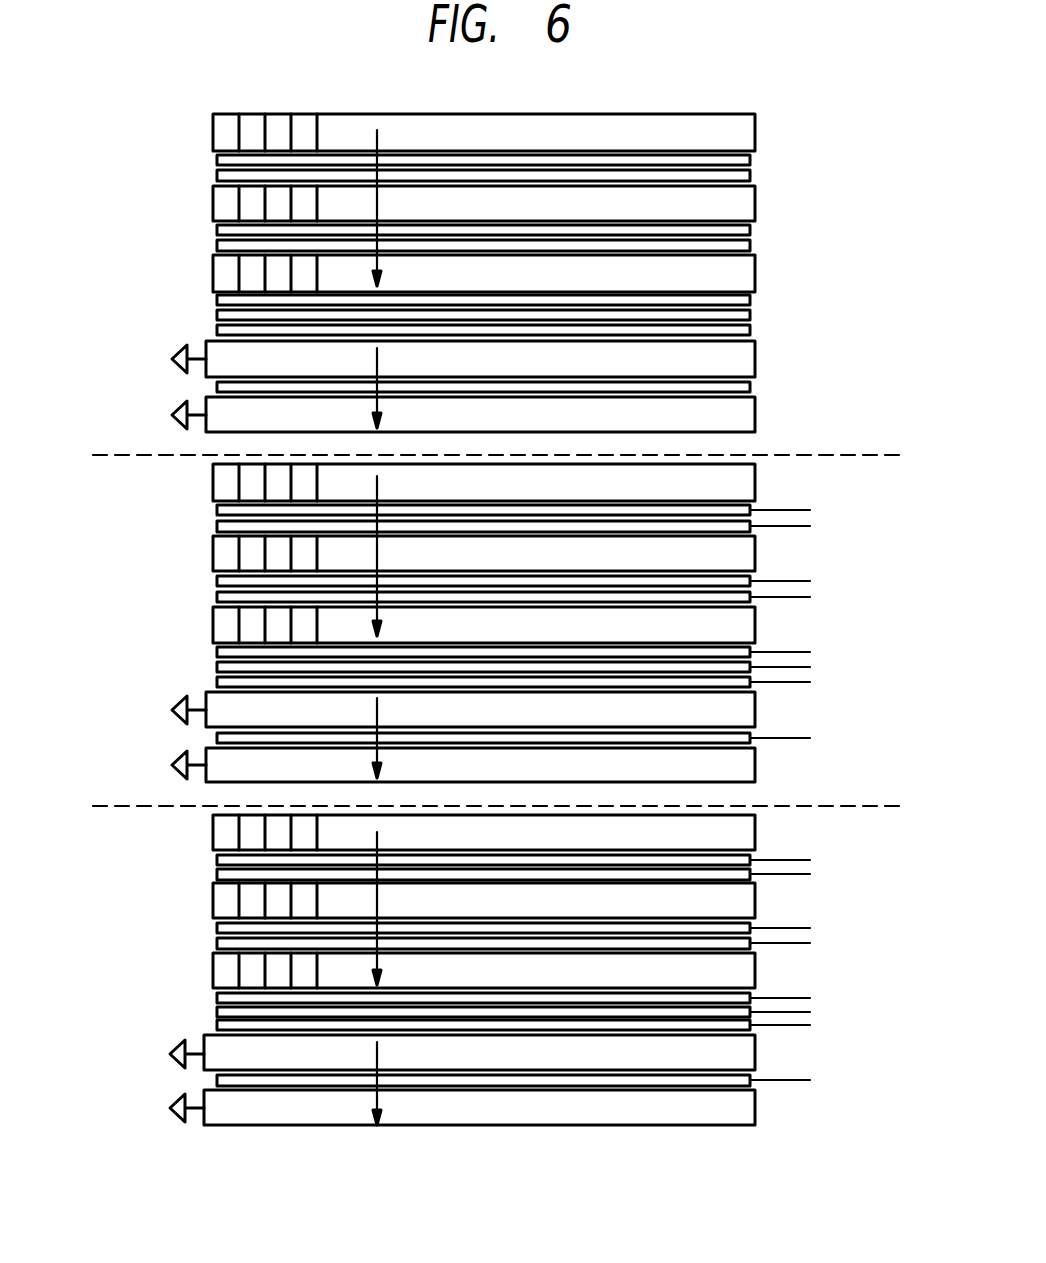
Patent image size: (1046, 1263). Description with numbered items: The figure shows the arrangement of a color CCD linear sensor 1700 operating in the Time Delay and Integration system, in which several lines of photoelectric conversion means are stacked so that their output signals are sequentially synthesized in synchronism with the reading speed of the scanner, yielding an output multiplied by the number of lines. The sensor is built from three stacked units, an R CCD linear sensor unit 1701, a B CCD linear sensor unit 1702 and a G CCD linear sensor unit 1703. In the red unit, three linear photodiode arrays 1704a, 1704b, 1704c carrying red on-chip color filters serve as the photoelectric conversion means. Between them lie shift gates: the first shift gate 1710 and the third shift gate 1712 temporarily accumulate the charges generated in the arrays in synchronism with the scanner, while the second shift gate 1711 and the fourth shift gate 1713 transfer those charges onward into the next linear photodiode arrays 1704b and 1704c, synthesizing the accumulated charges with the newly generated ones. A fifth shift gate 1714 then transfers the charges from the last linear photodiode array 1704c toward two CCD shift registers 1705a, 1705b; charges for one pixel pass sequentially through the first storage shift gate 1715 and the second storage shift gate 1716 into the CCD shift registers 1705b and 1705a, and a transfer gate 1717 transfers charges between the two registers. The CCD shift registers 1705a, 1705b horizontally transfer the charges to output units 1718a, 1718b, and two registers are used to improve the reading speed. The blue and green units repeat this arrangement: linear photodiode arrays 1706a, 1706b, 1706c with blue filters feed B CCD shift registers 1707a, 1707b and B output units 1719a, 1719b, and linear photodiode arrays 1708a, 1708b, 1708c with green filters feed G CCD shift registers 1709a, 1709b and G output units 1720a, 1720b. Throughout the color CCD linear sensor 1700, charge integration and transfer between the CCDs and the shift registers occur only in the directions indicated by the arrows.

The color CCD linear sensor 1700 is at (293, 1137).
The R CCD linear sensor unit 1701 is at (483, 286).
The B CCD linear sensor unit 1702 is at (455, 636).
The G CCD linear sensor unit 1703 is at (455, 983).
The linear photodiode array 1704a is at (484, 132).
The linear photodiode array 1704b is at (484, 204).
The linear photodiode array 1704c is at (484, 273).
The CCD shift register 1705a is at (480, 359).
The CCD shift register 1705b is at (480, 414).
The linear photodiode array 1706a is at (484, 482).
The linear photodiode array 1706b is at (484, 554).
The linear photodiode array 1706c is at (484, 625).
The B CCD shift register 1707a is at (480, 709).
The B CCD shift register 1707b is at (480, 765).
The linear photodiode array 1708a is at (484, 833).
The linear photodiode array 1708b is at (484, 901).
The linear photodiode array 1708c is at (484, 971).
The G CCD shift register 1709a is at (479, 1052).
The G CCD shift register 1709b is at (479, 1107).
The shift gate SH1 1710 is at (750, 160).
The shift gate SH2 1711 is at (750, 175).
The shift gate SH3 1712 is at (750, 230).
The shift gate SH4 1713 is at (750, 245).
The shift gate SH5 1714 is at (750, 300).
The shift gate SG1 1715 is at (750, 315).
The shift gate SG2 1716 is at (750, 330).
The transfer gate TG1 1717 is at (750, 387).
The output unit 1718a is at (154, 342).
The output unit 1718b is at (154, 430).
The B output unit 1719a is at (154, 694).
The B output unit 1719b is at (154, 779).
The G output unit 1720a is at (153, 1038).
The G output unit 1720b is at (153, 1122).